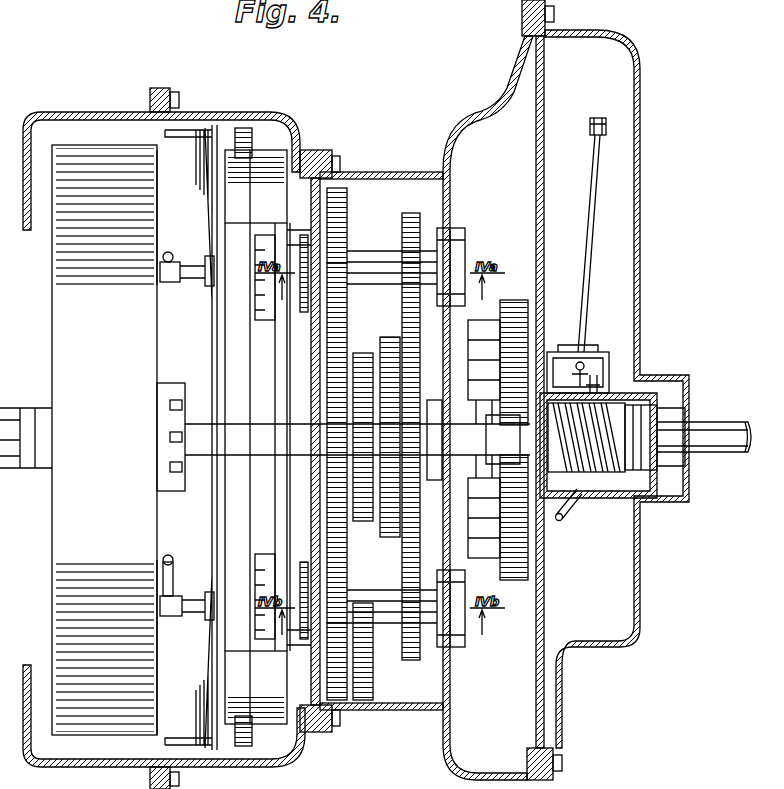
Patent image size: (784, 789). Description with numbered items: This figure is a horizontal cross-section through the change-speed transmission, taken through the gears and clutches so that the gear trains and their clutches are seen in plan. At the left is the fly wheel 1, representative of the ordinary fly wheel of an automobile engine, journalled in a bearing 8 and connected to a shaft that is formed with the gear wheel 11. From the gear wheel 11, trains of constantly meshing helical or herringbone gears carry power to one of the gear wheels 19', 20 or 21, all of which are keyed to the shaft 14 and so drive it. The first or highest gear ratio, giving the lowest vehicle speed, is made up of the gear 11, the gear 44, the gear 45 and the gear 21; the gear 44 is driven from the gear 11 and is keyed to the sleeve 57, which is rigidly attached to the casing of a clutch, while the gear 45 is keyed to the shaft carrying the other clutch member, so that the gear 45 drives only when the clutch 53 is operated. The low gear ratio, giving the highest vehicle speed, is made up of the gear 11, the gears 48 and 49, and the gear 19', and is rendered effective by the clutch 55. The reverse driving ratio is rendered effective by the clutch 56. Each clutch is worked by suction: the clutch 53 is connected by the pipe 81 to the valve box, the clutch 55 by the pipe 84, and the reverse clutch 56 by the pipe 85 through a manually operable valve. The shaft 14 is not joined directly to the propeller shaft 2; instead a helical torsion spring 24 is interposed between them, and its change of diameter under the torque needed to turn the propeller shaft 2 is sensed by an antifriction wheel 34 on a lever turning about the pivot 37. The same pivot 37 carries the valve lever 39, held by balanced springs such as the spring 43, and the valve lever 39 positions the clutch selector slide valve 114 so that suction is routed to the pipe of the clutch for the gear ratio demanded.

The fly wheel 1 is at (118, 440).
The propeller shaft 2 is at (740, 424).
The bearing 8 is at (42, 480).
The gear wheel 11 is at (348, 345).
The shaft 14 is at (500, 506).
The gear wheel 19' is at (378, 417).
The gear wheel 20 is at (390, 540).
The gear wheel 21 is at (412, 540).
The helical spring 24 is at (600, 490).
The antifriction wheel 34 is at (585, 370).
The pivot 37 is at (610, 390).
The valve lever 39 is at (588, 245).
The spring 43 is at (590, 362).
The gear 44 is at (348, 230).
The gear 45 is at (412, 213).
The gear 48 is at (342, 702).
The gear 49 is at (368, 702).
The clutch 53 is at (270, 165).
The clutch 55 is at (272, 742).
The clutch 56 is at (486, 352).
The sleeve 57 is at (376, 262).
The pipe 81 is at (168, 255).
The pipe 84 is at (172, 560).
The pipe 85 is at (560, 522).
The clutch selector slide valve 114 is at (606, 130).